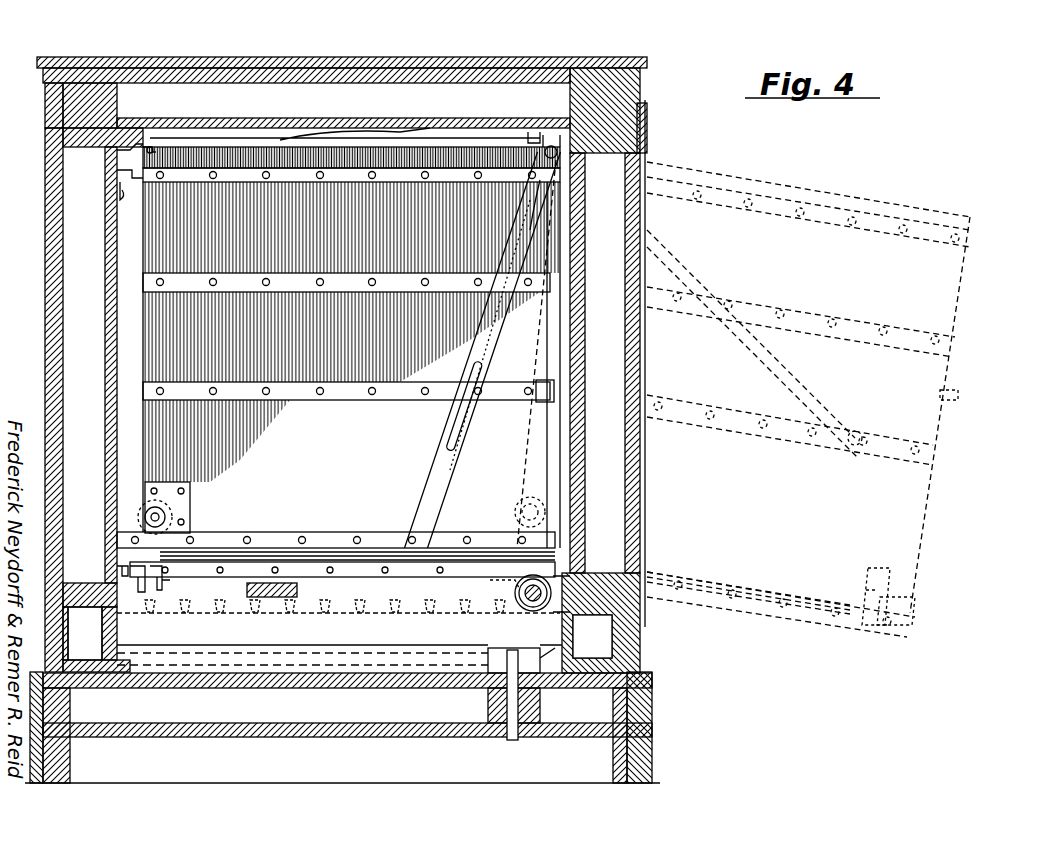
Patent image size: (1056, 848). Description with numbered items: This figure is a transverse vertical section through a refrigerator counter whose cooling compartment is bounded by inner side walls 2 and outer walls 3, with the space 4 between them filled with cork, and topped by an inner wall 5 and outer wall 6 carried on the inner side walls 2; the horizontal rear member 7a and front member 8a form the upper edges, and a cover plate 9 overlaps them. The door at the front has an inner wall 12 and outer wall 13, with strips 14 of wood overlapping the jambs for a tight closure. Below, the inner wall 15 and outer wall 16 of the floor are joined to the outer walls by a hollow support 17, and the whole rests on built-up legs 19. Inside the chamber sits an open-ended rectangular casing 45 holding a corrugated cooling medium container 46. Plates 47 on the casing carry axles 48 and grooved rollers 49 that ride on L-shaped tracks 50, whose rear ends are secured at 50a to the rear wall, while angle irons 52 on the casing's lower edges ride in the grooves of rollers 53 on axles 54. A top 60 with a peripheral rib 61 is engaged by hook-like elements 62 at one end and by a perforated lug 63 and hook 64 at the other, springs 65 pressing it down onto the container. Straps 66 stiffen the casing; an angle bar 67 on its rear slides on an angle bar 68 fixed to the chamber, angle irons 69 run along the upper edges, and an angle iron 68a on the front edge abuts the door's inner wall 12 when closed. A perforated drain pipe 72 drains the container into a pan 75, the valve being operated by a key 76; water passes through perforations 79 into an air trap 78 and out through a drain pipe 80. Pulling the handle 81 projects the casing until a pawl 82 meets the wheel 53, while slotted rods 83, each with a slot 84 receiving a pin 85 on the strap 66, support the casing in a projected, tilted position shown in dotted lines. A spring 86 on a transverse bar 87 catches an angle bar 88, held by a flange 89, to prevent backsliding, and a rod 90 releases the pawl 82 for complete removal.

The inner side walls 2 is at (105, 327).
The outer walls 3 is at (48, 352).
The space 4 is at (655, 641).
The inner wall 5 is at (389, 118).
The outer wall 6 is at (430, 83).
The horizontal rear member 7a is at (90, 80).
The horizontal front member 8a is at (600, 80).
The cover plate 9 is at (395, 57).
The inner wall of door 12 is at (585, 323).
The outer wall of door 13 is at (625, 353).
The strips of material 14 is at (648, 120).
The inner wall of the floor 15 is at (316, 688).
The outer wall of the floor 16 is at (320, 737).
The hollow support 17 is at (60, 632).
The legs 19 is at (70, 762).
The rectangular casing 45 is at (945, 515).
The cooling medium container 46 is at (280, 147).
The plates 47 is at (190, 495).
The axles 48 is at (148, 510).
The grooved rollers 49 is at (172, 514).
The L-shaped tracks 50 is at (275, 532).
The track rear securement 50a is at (117, 540).
The angle irons 52 is at (362, 550).
The rollers 53 is at (525, 602).
The axles 54 is at (548, 590).
The top 60 is at (226, 147).
The rib 61 is at (152, 146).
The hook-like elements 62 is at (118, 150).
The perforated lug 63 is at (550, 135).
The hook 64 is at (530, 135).
The springs 65 is at (336, 135).
The straps 66 is at (398, 382).
The angle bar 67 is at (117, 171).
The angle bar 68 is at (118, 200).
The angle iron 68a is at (540, 182).
The angle irons 69 is at (412, 183).
The perforated drain pipe 72 is at (882, 568).
The pan 75 is at (313, 652).
The key 76 is at (916, 600).
The air trap 78 is at (492, 648).
The perforations 79 is at (543, 648).
The drain pipe 80 is at (507, 708).
The handle 81 is at (960, 398).
The pawl 82 is at (165, 585).
The rods 83 is at (488, 325).
The slot 84 is at (465, 442).
The pin 85 is at (462, 390).
The spring 86 is at (366, 585).
The transverse bar 87 is at (262, 598).
The angle bar 88 is at (135, 585).
The flange 89 is at (117, 570).
The rod 90 is at (340, 552).